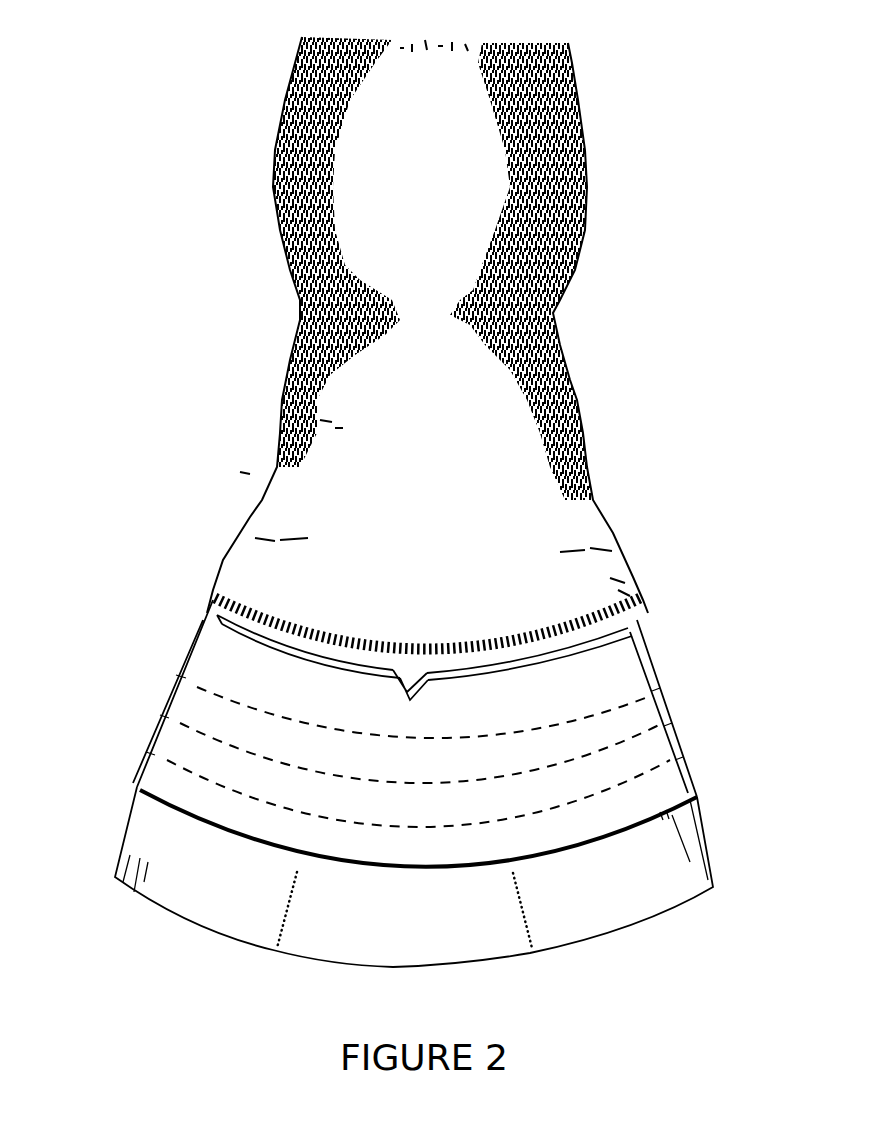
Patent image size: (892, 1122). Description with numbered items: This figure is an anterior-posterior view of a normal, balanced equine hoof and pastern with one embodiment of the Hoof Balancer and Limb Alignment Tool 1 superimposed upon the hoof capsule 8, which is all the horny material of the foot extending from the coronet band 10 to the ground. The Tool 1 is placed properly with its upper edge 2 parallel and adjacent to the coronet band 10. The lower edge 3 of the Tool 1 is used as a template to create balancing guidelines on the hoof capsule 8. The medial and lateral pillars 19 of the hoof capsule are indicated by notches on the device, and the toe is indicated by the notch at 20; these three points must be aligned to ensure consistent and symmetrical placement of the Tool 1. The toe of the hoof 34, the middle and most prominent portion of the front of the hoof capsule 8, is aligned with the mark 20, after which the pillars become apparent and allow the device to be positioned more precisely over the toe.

The Hoof Balancer and Limb Alignment Tool 1 is at (273, 775).
The upper edge 2 is at (310, 660).
The lower edge 3 is at (533, 853).
The hoof capsule 8 is at (195, 890).
The coronet band 10 is at (210, 607).
The medial and lateral pillars 19 is at (203, 618).
The center of the toe notch 20 is at (393, 675).
The toe of the hoof 34 is at (300, 913).